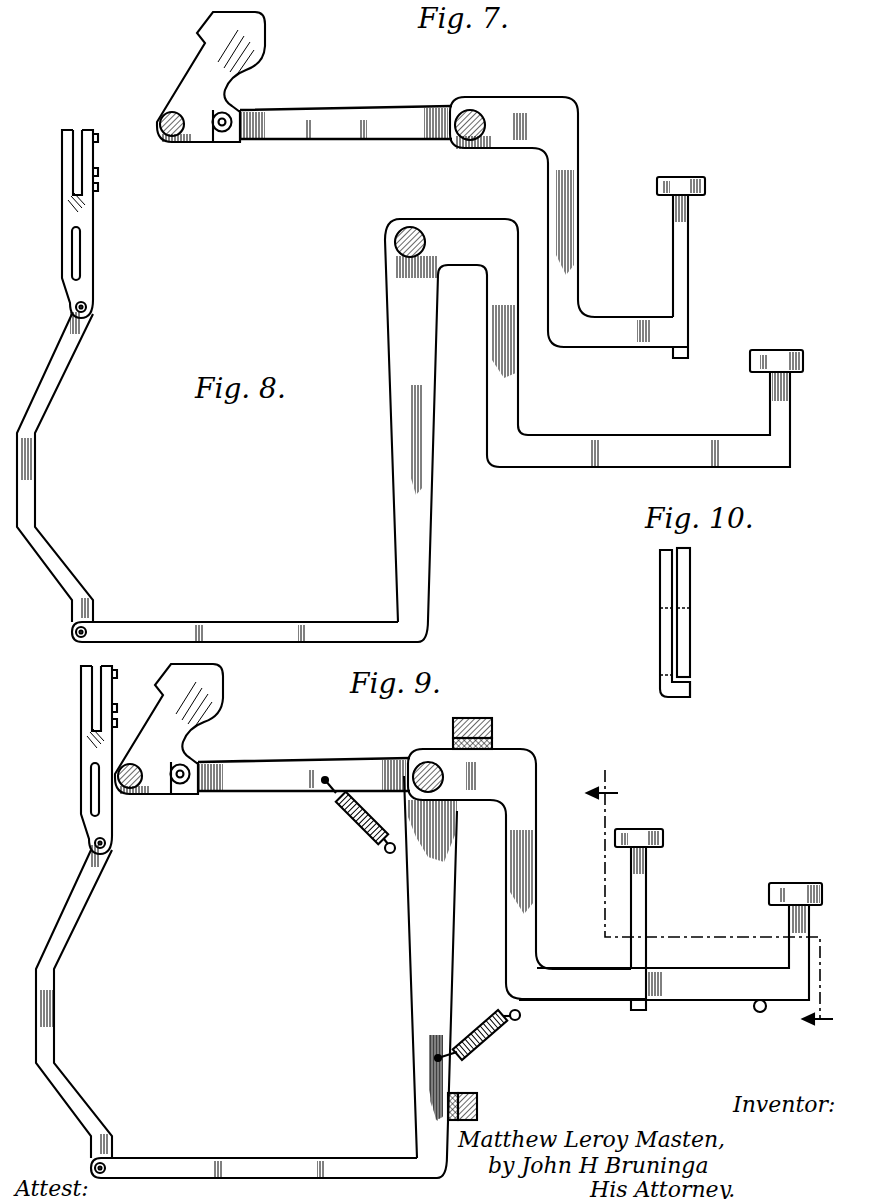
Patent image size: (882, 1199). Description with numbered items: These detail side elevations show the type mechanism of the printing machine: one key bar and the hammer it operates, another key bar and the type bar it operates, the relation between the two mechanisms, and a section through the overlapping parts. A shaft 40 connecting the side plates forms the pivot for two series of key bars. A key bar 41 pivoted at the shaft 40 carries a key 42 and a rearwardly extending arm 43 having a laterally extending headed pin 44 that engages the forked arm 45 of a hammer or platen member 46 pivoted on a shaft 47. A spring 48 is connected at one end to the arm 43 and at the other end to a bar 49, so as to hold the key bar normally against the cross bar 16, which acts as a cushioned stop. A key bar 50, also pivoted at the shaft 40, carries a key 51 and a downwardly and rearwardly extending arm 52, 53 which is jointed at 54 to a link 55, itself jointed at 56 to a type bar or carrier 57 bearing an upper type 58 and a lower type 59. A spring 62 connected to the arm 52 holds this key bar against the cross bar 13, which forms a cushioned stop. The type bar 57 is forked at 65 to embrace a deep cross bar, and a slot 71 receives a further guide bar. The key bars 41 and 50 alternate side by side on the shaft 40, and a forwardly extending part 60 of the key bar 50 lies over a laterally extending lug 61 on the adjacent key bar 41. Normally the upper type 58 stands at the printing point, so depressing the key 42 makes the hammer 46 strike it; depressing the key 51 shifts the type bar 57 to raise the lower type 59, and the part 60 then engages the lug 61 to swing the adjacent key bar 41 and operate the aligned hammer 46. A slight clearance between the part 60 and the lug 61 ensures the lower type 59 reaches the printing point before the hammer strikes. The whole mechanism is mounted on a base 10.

In FIG. 9, the base 10 is at (712, 910).
In FIG. 9, the cross bar 13 is at (478, 1103).
In FIG. 9, the cross bar 16 is at (494, 727).
In FIG. 7, the shaft 40 is at (478, 112).
In FIG. 8, the shaft 40 is at (420, 232).
In FIG. 9, the shaft 40 is at (442, 785).
In FIG. 7, the key bar 41 is at (553, 120).
In FIG. 9, the key bar 41 is at (527, 865).
In FIG. 10, the key bar 41 is at (667, 618).
In FIG. 7, the key 42 is at (686, 177).
In FIG. 9, the key 42 is at (654, 900).
In FIG. 7, the rearwardly extending arm 43 is at (331, 110).
In FIG. 9, the rearwardly extending arm 43 is at (304, 761).
In FIG. 7, the headed pin 44 is at (231, 116).
In FIG. 9, the headed pin 44 is at (205, 759).
In FIG. 7, the forked arm 45 is at (241, 141).
In FIG. 9, the forked arm 45 is at (198, 794).
In FIG. 7, the hammer or platen member 46 is at (211, 77).
In FIG. 9, the hammer or platen member 46 is at (169, 729).
In FIG. 7, the shaft 47 is at (173, 137).
In FIG. 9, the shaft 47 is at (142, 792).
In FIG. 9, the spring 48 is at (351, 810).
In FIG. 9, the bar or shaft 49 is at (379, 863).
In FIG. 8, the key bar 50 is at (472, 237).
In FIG. 8, the key 51 is at (782, 352).
In FIG. 9, the key 51 is at (796, 883).
In FIG. 8, the arm 52 is at (398, 468).
In FIG. 9, the arm 52 is at (430, 977).
In FIG. 8, the arm 53 is at (252, 623).
In FIG. 9, the arm 53 is at (264, 1152).
In FIG. 8, the joint 54 is at (90, 622).
In FIG. 9, the joint 54 is at (125, 1148).
In FIG. 8, the link 55 is at (28, 490).
In FIG. 9, the link 55 is at (74, 1001).
In FIG. 8, the joint 56 is at (88, 311).
In FIG. 9, the joint 56 is at (119, 854).
In FIG. 8, the type bar or carrier 57 is at (84, 222).
In FIG. 9, the type bar or carrier 57 is at (78, 760).
In FIG. 8, the upper type 58 is at (97, 136).
In FIG. 9, the upper type 58 is at (134, 662).
In FIG. 8, the lower type 59 is at (98, 180).
In FIG. 9, the lower type 59 is at (131, 703).
In FIG. 8, the forwardly extending part 60 is at (670, 435).
In FIG. 9, the forwardly extending part 60 is at (712, 969).
In FIG. 10, the forwardly extending part 60 is at (684, 646).
In FIG. 7, the lug 61 is at (680, 359).
In FIG. 9, the lug 61 is at (651, 1016).
In FIG. 10, the lug 61 is at (683, 691).
In FIG. 9, the spring 62 is at (483, 1043).
In FIG. 8, the slot or fork 65 is at (80, 152).
In FIG. 9, the slot or fork 65 is at (73, 698).
In FIG. 8, the slot 71 is at (77, 254).
In FIG. 9, the slot 71 is at (72, 794).